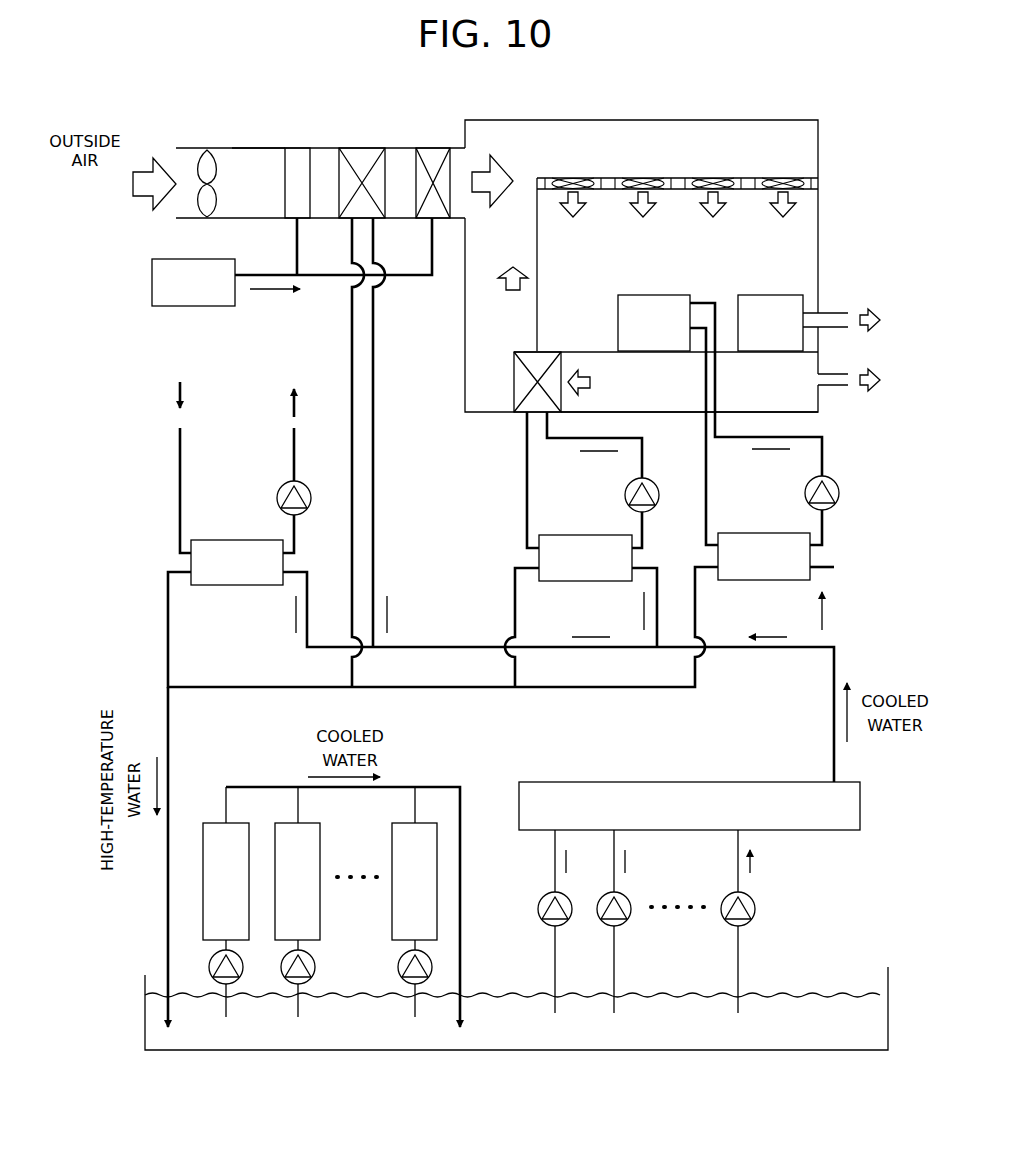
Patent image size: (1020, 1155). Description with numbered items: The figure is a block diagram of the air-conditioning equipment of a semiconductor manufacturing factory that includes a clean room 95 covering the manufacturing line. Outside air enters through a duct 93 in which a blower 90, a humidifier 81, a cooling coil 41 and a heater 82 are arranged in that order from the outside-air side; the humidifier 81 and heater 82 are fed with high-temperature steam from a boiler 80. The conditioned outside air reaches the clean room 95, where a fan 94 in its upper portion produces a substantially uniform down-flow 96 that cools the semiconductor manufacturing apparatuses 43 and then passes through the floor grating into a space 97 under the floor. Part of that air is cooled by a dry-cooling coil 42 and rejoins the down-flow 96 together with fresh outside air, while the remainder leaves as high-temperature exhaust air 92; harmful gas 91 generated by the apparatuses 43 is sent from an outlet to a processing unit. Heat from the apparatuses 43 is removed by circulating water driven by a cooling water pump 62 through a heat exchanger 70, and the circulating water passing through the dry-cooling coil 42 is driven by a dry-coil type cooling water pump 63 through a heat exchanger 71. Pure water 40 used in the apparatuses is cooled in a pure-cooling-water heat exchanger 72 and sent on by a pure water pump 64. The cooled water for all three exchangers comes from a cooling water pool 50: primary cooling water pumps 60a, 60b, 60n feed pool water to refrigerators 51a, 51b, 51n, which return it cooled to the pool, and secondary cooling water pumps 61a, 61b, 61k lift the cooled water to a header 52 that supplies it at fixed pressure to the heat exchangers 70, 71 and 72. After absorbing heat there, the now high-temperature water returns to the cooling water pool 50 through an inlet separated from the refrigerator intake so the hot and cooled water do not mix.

The pure water 40 is at (184, 389).
The cooling coil 41 is at (361, 150).
The dry-cooling coil 42 is at (513, 382).
The semiconductor manufacturing apparatuses 43 is at (623, 294).
The cooling water pool 50 is at (355, 1052).
The refrigerator 51a is at (215, 822).
The refrigerator 51b is at (321, 850).
The refrigerator 51n is at (425, 822).
The header 52 is at (648, 782).
The primary cooling water pump 60a is at (209, 962).
The primary cooling water pump 60b is at (315, 960).
The primary cooling water pump 60n is at (432, 962).
The secondary cooling water pump 61a is at (560, 927).
The secondary cooling water pump 61b is at (619, 927).
The secondary cooling water pump 61k is at (756, 903).
The cooling water pump 62 is at (832, 478).
The dry-coil type cooling water pump 63 is at (654, 480).
The pure water pump 64 is at (305, 484).
The heat exchanger 70 is at (735, 532).
The dry-coil cooling water type heat exchanger 71 is at (555, 534).
The pure-cooling-water heat exchanger 72 is at (208, 538).
The boiler 80 is at (168, 306).
The humidifier 81 is at (305, 150).
The heater 82 is at (428, 150).
The blower 90 is at (210, 150).
The harmful gas 91 is at (874, 315).
The high-temperature exhaust air 92 is at (874, 375).
The duct 93 is at (256, 150).
The fan 94 is at (624, 180).
The clean room 95 is at (534, 214).
The down-flow 96 is at (787, 198).
The space under floor 97 is at (808, 396).